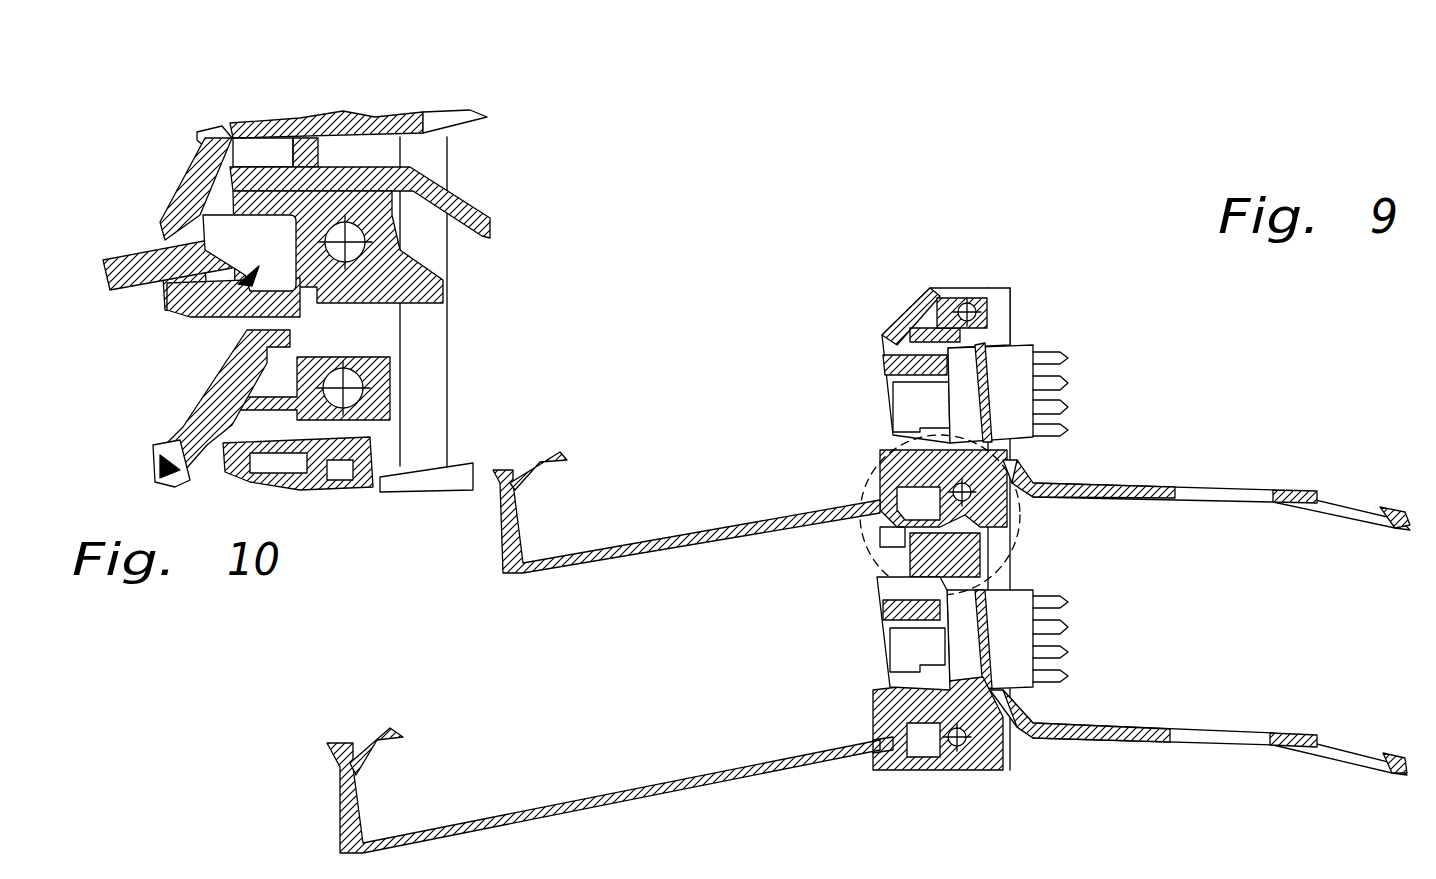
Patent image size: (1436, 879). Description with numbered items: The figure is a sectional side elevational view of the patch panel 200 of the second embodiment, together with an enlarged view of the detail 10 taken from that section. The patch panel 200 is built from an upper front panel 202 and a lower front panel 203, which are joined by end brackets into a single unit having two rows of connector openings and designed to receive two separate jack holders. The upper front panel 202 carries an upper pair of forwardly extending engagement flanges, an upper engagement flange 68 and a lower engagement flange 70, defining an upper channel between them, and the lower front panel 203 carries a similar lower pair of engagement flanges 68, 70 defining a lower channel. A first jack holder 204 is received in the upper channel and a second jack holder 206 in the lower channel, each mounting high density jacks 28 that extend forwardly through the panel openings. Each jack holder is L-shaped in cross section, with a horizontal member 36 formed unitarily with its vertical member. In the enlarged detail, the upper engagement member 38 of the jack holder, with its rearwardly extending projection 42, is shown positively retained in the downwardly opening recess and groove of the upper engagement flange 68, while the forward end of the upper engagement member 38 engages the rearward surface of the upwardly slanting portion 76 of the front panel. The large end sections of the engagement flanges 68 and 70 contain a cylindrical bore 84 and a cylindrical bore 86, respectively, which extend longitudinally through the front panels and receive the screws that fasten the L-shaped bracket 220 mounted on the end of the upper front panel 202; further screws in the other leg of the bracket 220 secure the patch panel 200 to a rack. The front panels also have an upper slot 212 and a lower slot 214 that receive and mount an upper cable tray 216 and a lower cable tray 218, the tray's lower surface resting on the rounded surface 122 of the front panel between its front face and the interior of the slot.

In FIG. 9, the detail 10 is at (950, 515).
In FIG. 10, the high density jacks 28 is at (275, 120).
In FIG. 9, the high density jacks 28 is at (1075, 402).
In FIG. 10, the horizontal member 36 is at (493, 200).
In FIG. 10, the upper engagement member 38 is at (158, 460).
In FIG. 10, the rearwardly extending projection 42 is at (340, 362).
In FIG. 9, the upper engagement flange 68 is at (968, 300).
In FIG. 9, the lower engagement flange 70 is at (952, 468).
In FIG. 10, the upwardly slanting portion 76 is at (200, 415).
In FIG. 10, the cylindrical bore 84 is at (365, 383).
In FIG. 10, the cylindrical bore 86 is at (370, 237).
In FIG. 10, the rounded surface 122 is at (175, 305).
In FIG. 9, the patch panel 200 is at (1178, 397).
In FIG. 10, the upper front panel 202 is at (190, 167).
In FIG. 9, the upper front panel 202 is at (893, 330).
In FIG. 9, the lower front panel 203 is at (875, 577).
In FIG. 10, the first jack holder 204 is at (462, 176).
In FIG. 9, the first jack holder 204 is at (1120, 478).
In FIG. 9, the second jack holder 206 is at (1100, 725).
In FIG. 10, the upper slot 212 is at (230, 305).
In FIG. 9, the upper slot 212 is at (885, 530).
In FIG. 9, the lower slot 214 is at (912, 770).
In FIG. 10, the upper cable tray 216 is at (118, 255).
In FIG. 9, the upper cable tray 216 is at (758, 515).
In FIG. 9, the lower cable tray 218 is at (620, 780).
In FIG. 9, the bracket 220 is at (1015, 312).